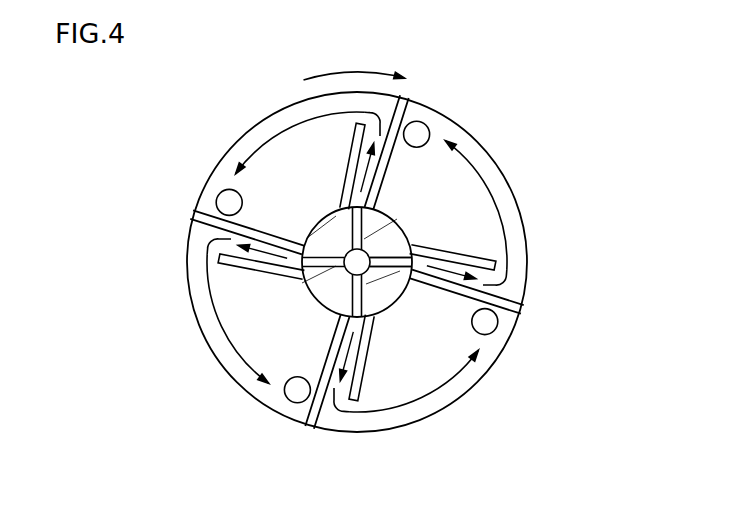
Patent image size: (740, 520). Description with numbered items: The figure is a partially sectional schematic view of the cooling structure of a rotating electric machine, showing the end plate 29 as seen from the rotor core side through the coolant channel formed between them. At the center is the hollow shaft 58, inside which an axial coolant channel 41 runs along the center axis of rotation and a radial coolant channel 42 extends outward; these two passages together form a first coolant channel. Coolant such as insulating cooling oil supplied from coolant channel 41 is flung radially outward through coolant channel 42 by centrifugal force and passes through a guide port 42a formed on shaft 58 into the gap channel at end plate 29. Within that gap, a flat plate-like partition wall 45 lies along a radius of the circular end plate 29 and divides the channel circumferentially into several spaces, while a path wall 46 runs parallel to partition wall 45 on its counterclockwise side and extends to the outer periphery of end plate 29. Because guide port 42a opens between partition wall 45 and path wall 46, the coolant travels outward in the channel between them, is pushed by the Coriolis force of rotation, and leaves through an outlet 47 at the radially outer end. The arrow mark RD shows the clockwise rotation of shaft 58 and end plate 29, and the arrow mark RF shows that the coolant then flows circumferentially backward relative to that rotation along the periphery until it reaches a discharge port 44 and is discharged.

The end plate 29 is at (411, 112).
The coolant channel 41 is at (365, 267).
The coolant channel 42 is at (376, 254).
The guide port 42a is at (362, 266).
The discharge port 44 is at (430, 133).
The partition wall 45 is at (497, 321).
The path wall 46 is at (500, 284).
The outlet 47 is at (508, 299).
The shaft 58 is at (331, 291).
The coolant flow RF is at (497, 203).
The rotation direction RD is at (355, 71).